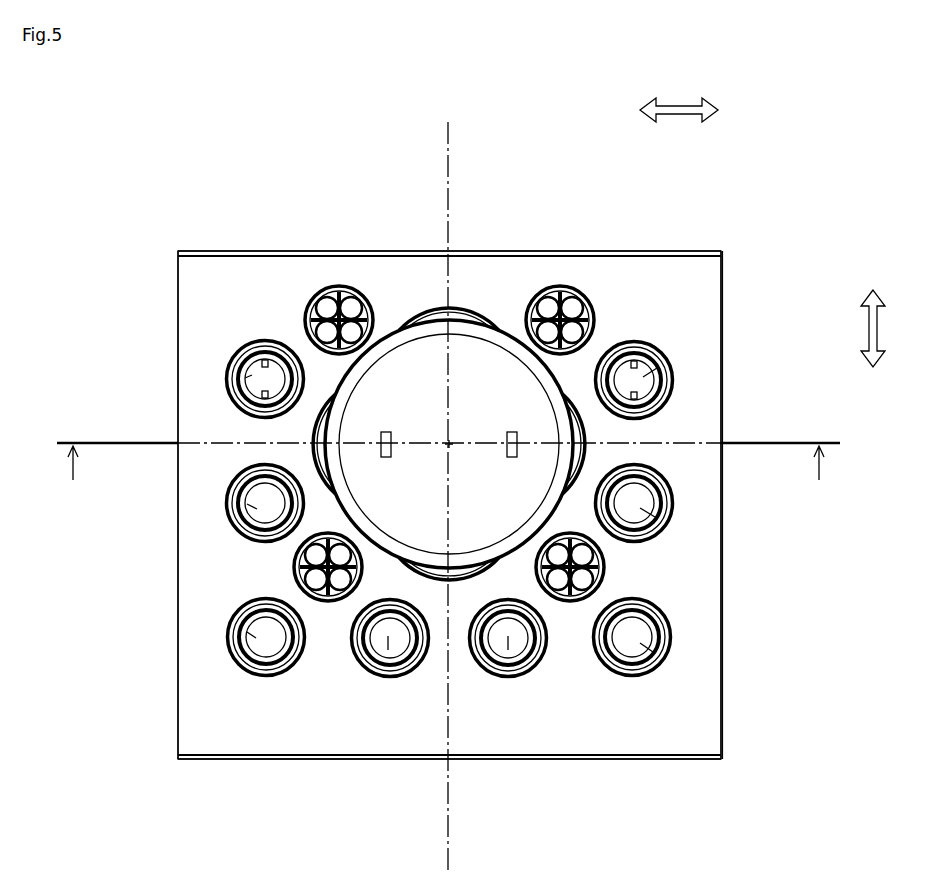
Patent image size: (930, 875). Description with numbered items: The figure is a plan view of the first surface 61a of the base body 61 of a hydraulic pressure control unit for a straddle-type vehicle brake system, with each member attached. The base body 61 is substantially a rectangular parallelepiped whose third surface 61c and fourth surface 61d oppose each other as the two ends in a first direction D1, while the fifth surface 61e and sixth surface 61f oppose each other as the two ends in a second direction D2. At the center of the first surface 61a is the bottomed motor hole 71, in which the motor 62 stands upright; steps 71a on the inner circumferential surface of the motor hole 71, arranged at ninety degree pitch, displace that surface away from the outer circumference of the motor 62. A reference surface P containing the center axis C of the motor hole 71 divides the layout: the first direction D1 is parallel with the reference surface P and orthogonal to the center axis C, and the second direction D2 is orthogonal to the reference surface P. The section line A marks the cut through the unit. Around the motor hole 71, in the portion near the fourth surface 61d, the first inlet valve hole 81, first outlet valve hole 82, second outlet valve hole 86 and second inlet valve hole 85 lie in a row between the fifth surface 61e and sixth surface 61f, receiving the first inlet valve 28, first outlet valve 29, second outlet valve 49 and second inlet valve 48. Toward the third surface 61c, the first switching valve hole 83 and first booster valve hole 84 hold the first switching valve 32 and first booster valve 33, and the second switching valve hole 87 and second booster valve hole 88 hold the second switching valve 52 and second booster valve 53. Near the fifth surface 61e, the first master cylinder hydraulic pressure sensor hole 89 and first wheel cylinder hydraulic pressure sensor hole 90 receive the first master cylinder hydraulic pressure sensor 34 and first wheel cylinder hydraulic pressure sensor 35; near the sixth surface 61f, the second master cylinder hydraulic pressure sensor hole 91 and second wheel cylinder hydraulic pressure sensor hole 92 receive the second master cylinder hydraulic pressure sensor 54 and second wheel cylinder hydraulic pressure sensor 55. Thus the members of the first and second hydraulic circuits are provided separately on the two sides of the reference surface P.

The base body 61 is at (698, 270).
The first surface 61a is at (210, 272).
The third surface 61c is at (222, 256).
The fourth surface 61d is at (233, 760).
The fifth surface 61e is at (178, 290).
The sixth surface 61f is at (721, 290).
The motor hole 71 is at (388, 292).
The step 71a is at (455, 318).
The motor 62 is at (478, 365).
The reference surface P is at (448, 162).
The center axis C is at (447, 438).
The section line A- A is at (447, 462).
The first direction D1 is at (892, 328).
The second direction D2 is at (679, 95).
The first booster valve 33 is at (200, 375).
The second booster valve 53 is at (699, 374).
The first switching valve 32 is at (201, 503).
The second switching valve 52 is at (696, 507).
The first inlet valve 28 is at (201, 672).
The second inlet valve 48 is at (694, 673).
The first outlet valve 29 is at (375, 718).
The second outlet valve 49 is at (515, 718).
The first master cylinder hydraulic pressure sensor 34 is at (328, 270).
The second master cylinder hydraulic pressure sensor 54 is at (572, 271).
The first wheel cylinder hydraulic pressure sensor 35 is at (230, 576).
The second wheel cylinder hydraulic pressure sensor 55 is at (668, 579).
The first booster valve hole 84 is at (202, 388).
The second booster valve hole 88 is at (689, 389).
The first switching valve hole 83 is at (202, 493).
The second switching valve hole 87 is at (692, 494).
The first inlet valve hole 81 is at (202, 681).
The second inlet valve hole 85 is at (687, 681).
The first outlet valve hole 82 is at (398, 718).
The second outlet valve hole 86 is at (493, 718).
The first master cylinder hydraulic pressure sensor hole 89 is at (338, 281).
The second master cylinder hydraulic pressure sensor hole 91 is at (560, 281).
The first wheel cylinder hydraulic pressure sensor hole 90 is at (240, 567).
The second wheel cylinder hydraulic pressure sensor hole 92 is at (652, 567).